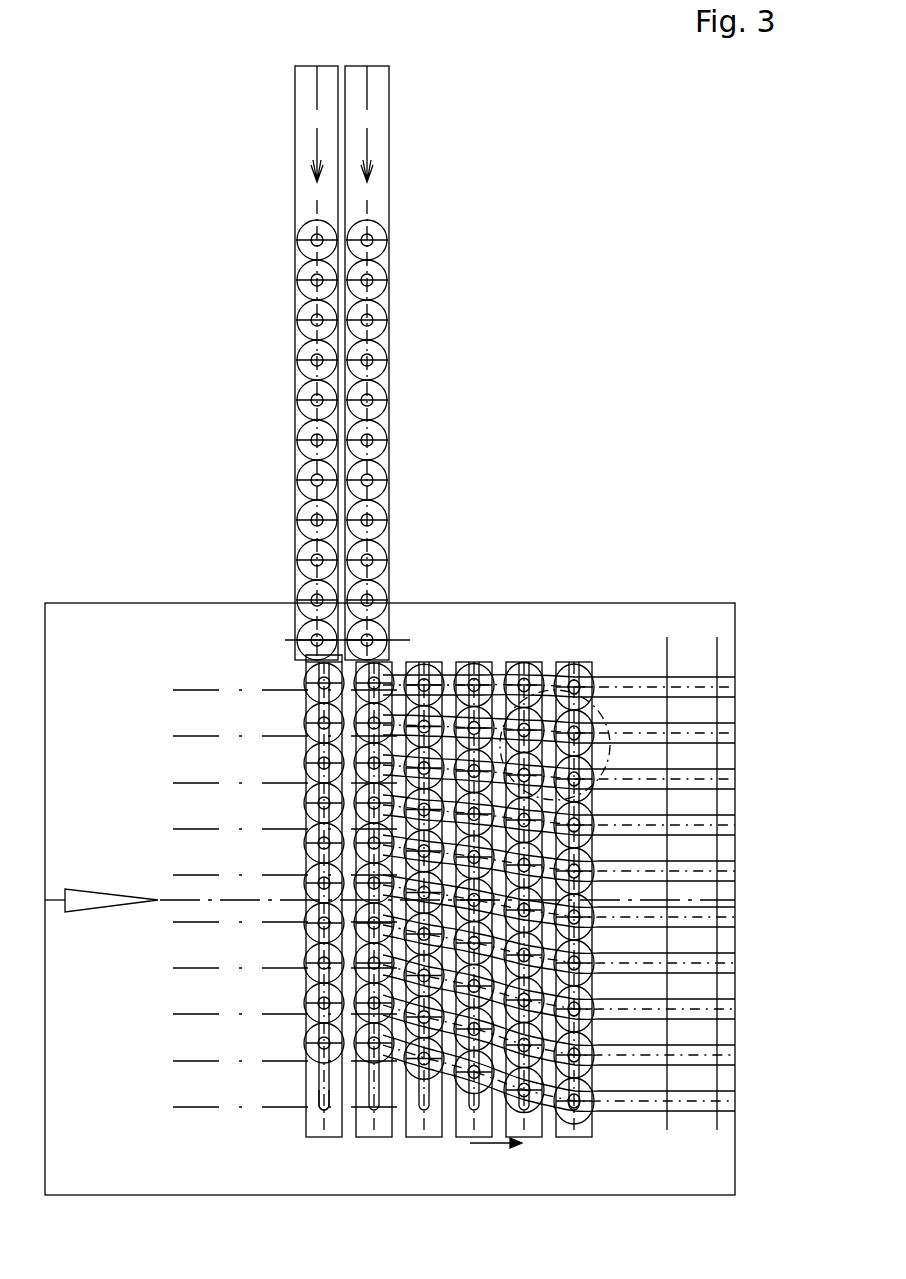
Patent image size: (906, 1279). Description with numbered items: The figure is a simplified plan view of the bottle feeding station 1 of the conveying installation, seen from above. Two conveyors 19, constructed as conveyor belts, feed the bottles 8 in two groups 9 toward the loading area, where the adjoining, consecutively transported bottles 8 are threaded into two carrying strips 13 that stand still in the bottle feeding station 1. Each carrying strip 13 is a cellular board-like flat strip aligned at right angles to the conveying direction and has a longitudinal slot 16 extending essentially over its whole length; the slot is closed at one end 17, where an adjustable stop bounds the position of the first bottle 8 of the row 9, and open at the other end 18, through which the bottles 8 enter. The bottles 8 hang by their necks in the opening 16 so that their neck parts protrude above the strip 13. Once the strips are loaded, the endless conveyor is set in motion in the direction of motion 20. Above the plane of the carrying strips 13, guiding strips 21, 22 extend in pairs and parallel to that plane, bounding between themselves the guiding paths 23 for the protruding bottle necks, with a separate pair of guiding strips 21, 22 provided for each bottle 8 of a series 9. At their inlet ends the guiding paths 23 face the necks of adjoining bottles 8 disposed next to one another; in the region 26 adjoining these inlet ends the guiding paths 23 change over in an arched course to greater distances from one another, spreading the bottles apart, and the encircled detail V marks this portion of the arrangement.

The bottle feeding station 1 is at (207, 1116).
The bottle 8 is at (380, 353).
The group of bottles 9 is at (383, 505).
The carrying strip 13 is at (308, 986).
The longitudinal slot 16 is at (308, 940).
The closed end 17 is at (306, 1130).
The open end 18 is at (308, 672).
The conveyor 19 is at (297, 430).
The direction of motion 20 is at (490, 1143).
The guiding strip 21 is at (620, 1105).
The guiding strip 22 is at (708, 1088).
The guiding path 23 is at (660, 1102).
The region adjoining inlet ends 26 is at (495, 668).
The detail V is at (611, 714).